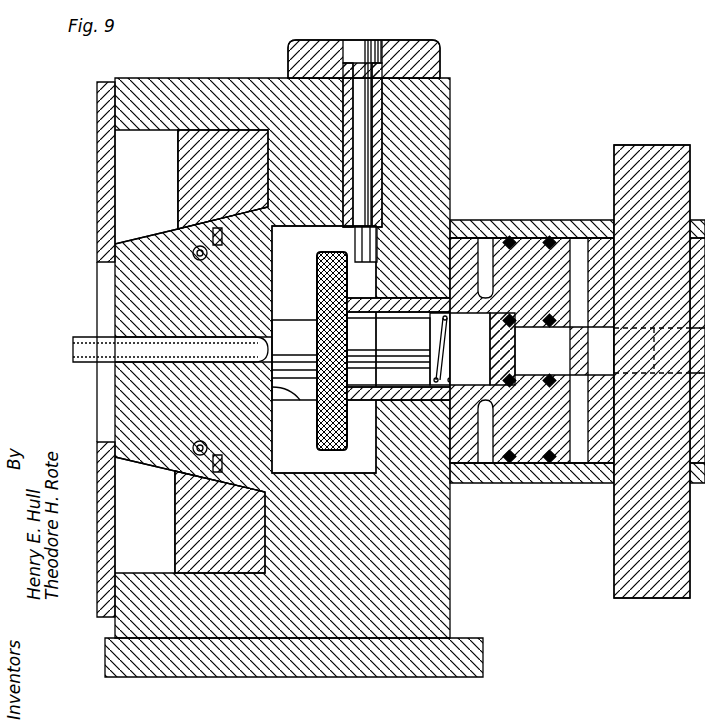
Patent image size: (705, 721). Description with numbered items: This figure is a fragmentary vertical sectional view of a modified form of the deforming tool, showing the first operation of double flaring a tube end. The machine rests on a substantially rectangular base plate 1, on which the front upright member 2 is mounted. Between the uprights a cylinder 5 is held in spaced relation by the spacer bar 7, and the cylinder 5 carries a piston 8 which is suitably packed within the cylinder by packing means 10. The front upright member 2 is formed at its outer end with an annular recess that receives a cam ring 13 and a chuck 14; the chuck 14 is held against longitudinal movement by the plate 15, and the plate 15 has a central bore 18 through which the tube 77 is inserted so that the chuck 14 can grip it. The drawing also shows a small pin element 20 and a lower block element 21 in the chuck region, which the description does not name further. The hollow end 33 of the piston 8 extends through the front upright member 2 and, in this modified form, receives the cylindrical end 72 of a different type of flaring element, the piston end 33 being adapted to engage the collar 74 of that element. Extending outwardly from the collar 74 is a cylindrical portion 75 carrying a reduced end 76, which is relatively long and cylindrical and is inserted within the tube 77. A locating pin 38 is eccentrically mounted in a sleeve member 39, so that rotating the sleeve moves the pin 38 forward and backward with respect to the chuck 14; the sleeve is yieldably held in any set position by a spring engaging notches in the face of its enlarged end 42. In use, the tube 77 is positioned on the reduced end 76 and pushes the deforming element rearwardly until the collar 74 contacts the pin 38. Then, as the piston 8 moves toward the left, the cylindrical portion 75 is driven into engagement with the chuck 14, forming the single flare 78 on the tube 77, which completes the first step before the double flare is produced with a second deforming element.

The base plate 1 is at (328, 667).
The front upright member 2 is at (453, 122).
The cylinder 5 is at (552, 220).
The spacer bar 7 is at (653, 147).
The piston 8 is at (583, 236).
The packing means 10 is at (512, 237).
The cam ring 13 is at (195, 153).
The chuck 14 is at (146, 248).
The plate 15 is at (95, 223).
The central bore 18 is at (105, 290).
The pin 20 is at (222, 468).
The lower block 21 is at (173, 472).
The end of the piston 33 is at (413, 303).
The pin 38 is at (357, 183).
The sleeve member 39 is at (380, 160).
The enlarged end of the sleeve 42 is at (440, 53).
The cylindrical end of the flaring element 72 is at (373, 357).
The collar 74 is at (327, 246).
The cylindrical portion 75 is at (297, 320).
The reduced end 76 is at (250, 345).
The tube 77 is at (73, 350).
The single flare 78 is at (262, 362).